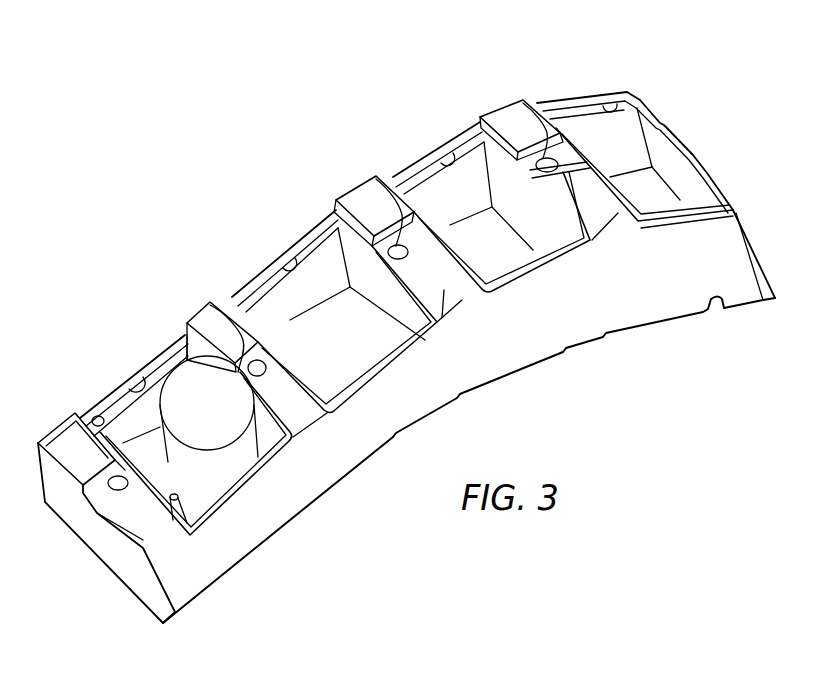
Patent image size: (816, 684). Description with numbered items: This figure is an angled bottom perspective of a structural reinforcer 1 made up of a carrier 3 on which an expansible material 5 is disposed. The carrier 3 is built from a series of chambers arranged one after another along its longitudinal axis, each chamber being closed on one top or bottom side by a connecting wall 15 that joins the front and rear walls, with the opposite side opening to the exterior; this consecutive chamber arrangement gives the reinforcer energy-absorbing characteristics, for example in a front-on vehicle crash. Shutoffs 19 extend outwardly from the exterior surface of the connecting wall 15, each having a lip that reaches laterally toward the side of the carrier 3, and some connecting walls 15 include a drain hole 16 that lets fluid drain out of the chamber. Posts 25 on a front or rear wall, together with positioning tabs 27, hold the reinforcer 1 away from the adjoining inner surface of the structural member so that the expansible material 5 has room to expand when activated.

The structural reinforcer 1 is at (652, 58).
The carrier 3 is at (100, 533).
The expansible material 5 is at (192, 311).
The connecting wall 15 is at (193, 310).
The drain hole 16 is at (397, 250).
The shutoff 19 is at (241, 376).
The post 25 is at (92, 416).
The positioning tab 27 is at (703, 160).